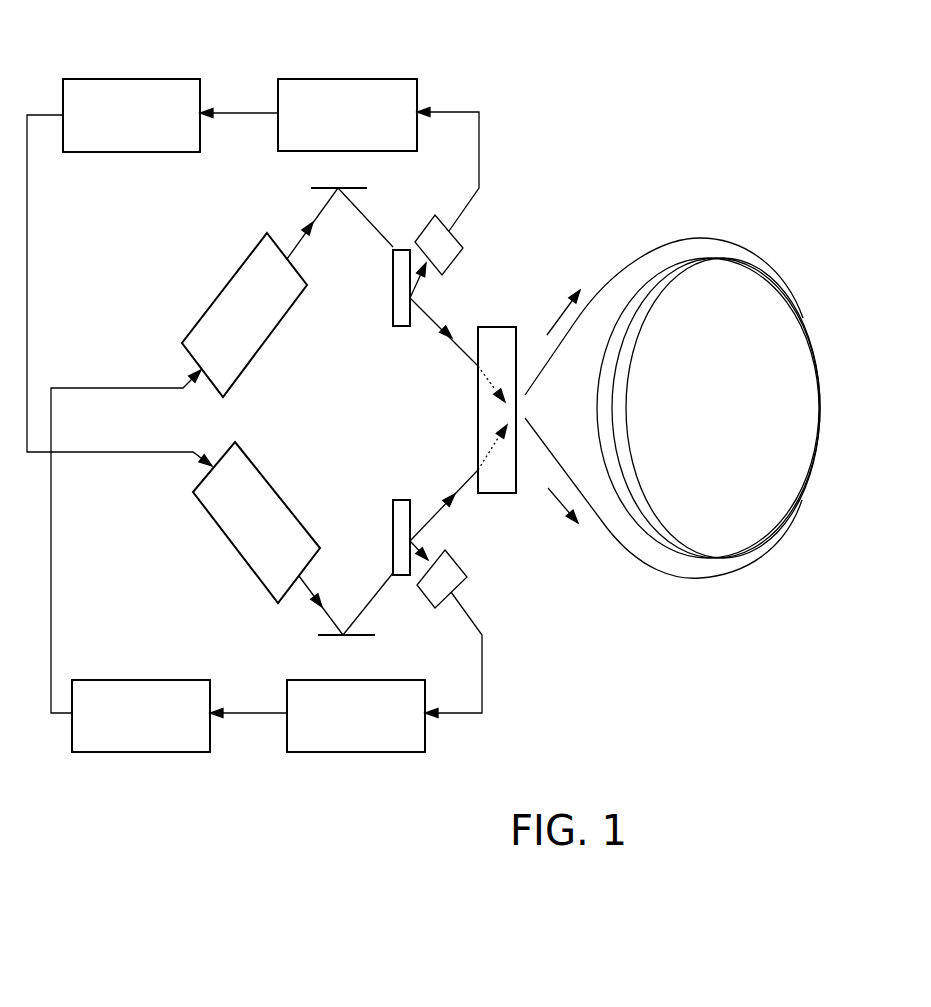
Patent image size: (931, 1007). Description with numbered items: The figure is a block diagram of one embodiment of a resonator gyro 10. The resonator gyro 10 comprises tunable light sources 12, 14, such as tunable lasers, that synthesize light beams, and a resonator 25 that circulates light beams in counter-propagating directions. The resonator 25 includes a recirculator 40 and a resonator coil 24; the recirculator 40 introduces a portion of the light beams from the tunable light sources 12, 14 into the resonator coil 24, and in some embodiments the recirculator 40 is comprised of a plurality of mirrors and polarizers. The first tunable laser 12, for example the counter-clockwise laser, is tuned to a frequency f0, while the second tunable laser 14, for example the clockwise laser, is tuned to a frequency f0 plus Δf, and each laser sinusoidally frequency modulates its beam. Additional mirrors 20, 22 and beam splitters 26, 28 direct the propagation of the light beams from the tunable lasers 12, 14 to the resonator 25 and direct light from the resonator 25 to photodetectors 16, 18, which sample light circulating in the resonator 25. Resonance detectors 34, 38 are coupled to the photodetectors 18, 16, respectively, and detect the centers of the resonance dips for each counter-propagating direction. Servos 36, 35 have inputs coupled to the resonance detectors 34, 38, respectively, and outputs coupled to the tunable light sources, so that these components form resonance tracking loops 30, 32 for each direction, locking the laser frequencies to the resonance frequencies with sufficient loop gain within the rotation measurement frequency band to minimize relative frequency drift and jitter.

The resonator gyro 10 is at (645, 96).
The first tunable laser 12 is at (261, 527).
The second tunable laser 14 is at (258, 322).
The photodetector 16 is at (458, 560).
The photodetector 18 is at (429, 220).
The mirror 20 is at (338, 640).
The mirror 22 is at (328, 186).
The resonator coil 24 is at (757, 258).
The resonator 25 is at (606, 563).
The beam splitter 26 is at (392, 543).
The beam splitter 28 is at (392, 296).
The resonance tracking loop 30 is at (504, 154).
The resonance tracking loop 32 is at (505, 678).
The resonance detector 34 is at (326, 79).
The servo 35 is at (120, 680).
The servo 36 is at (110, 79).
The resonance detector 38 is at (390, 680).
The recirculator 40 is at (471, 406).